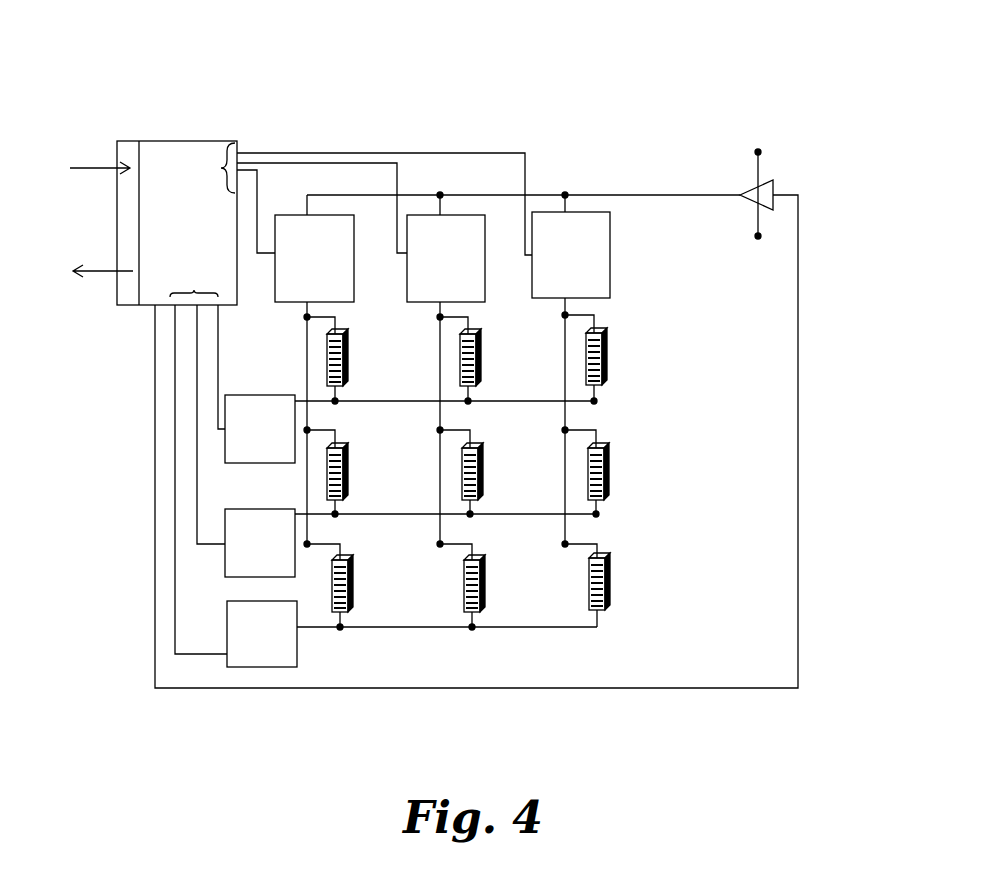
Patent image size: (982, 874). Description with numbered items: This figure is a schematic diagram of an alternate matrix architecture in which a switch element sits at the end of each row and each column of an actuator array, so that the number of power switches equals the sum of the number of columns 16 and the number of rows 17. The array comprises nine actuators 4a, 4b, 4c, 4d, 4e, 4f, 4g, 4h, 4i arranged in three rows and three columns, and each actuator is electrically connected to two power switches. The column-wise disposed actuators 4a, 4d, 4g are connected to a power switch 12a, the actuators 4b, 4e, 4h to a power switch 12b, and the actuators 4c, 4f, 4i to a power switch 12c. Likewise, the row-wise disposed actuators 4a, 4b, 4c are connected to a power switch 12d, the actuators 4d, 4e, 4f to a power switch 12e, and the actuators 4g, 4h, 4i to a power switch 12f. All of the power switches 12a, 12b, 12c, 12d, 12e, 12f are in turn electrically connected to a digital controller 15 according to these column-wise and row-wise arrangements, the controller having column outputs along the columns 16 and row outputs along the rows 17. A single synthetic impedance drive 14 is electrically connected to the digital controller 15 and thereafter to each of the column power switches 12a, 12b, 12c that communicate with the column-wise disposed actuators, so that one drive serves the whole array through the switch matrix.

The actuator 4a is at (340, 360).
The actuator 4b is at (474, 360).
The actuator 4c is at (598, 359).
The actuator 4d is at (342, 473).
The actuator 4e is at (474, 473).
The actuator 4f is at (598, 473).
The actuator 4g is at (343, 587).
The actuator 4h is at (475, 587).
The actuator 4i is at (598, 585).
The power switch 12a is at (354, 302).
The power switch 12b is at (485, 302).
The power switch 12c is at (610, 283).
The power switch 12d is at (255, 396).
The power switch 12e is at (253, 518).
The power switch 12f is at (297, 653).
The synthetic impedance drive 14 is at (773, 184).
The digital controller 15 is at (190, 137).
The columns 16 is at (222, 154).
The rows 17 is at (158, 278).